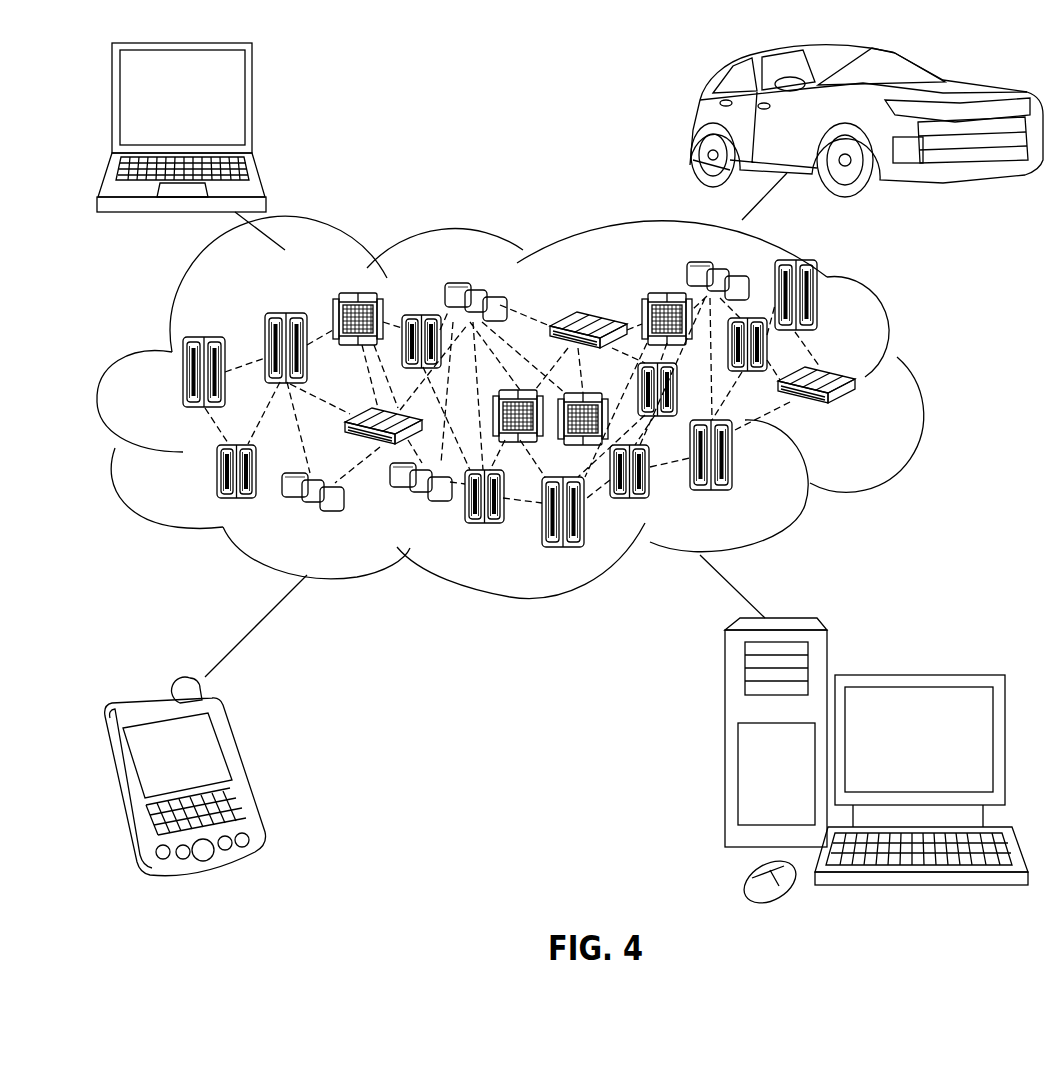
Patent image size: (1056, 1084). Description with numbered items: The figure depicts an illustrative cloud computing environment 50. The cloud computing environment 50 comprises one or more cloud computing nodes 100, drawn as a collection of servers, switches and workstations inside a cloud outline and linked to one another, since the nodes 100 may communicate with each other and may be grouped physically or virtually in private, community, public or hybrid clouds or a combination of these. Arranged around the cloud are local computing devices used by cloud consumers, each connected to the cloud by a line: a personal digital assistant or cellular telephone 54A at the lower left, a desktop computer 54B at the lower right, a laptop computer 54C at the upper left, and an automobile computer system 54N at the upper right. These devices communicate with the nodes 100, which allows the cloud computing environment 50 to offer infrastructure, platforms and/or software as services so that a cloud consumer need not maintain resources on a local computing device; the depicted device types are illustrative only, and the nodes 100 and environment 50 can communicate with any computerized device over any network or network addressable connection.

The cloud computing environment 50 is at (916, 386).
The cloud computing nodes 100 is at (858, 413).
The personal digital assistant or cellular telephone 54A is at (243, 770).
The desktop computer 54B is at (915, 672).
The laptop computer 54C is at (254, 106).
The automobile computer system 54N is at (692, 123).